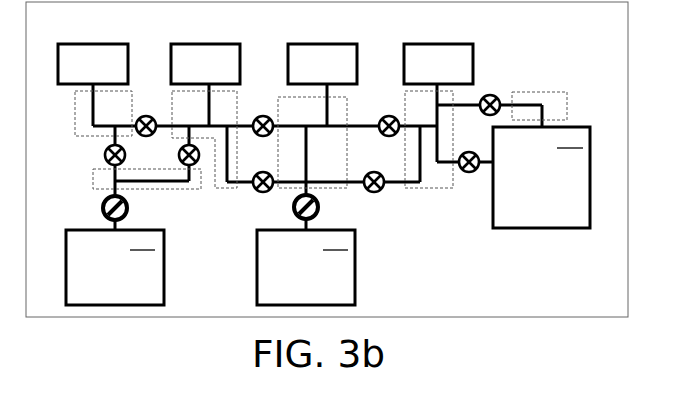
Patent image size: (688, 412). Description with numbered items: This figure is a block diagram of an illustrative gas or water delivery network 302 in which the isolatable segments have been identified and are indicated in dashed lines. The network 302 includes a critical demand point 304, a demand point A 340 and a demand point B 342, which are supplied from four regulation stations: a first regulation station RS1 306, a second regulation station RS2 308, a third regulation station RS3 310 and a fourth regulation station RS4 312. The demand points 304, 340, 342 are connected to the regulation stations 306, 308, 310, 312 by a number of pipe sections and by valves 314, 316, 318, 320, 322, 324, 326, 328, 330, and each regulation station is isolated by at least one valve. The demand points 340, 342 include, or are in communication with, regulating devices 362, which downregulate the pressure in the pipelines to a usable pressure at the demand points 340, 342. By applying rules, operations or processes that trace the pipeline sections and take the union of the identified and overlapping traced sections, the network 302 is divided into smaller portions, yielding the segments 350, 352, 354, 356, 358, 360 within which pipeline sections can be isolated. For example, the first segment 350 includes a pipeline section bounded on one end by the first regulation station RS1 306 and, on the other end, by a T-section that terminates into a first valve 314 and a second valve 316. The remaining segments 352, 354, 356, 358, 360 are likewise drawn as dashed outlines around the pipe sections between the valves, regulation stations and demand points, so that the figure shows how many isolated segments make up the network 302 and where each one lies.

The gas or water delivery network 302 is at (607, 55).
The critical demand point 304 is at (541, 177).
The first regulation station RS1 306 is at (98, 43).
The second regulation station RS2 308 is at (217, 43).
The third regulation station RS3 310 is at (335, 43).
The fourth regulation station RS4 312 is at (449, 43).
The first valve 314 is at (144, 118).
The second valve 316 is at (105, 154).
The valve 318 is at (179, 153).
The valve 320 is at (256, 119).
The valve 322 is at (256, 175).
The valve 324 is at (382, 119).
The valve 326 is at (367, 175).
The valve 328 is at (485, 97).
The valve 330 is at (472, 172).
The demand point A 340 is at (115, 267).
The demand point B 342 is at (306, 267).
The first segment 350 is at (75, 124).
The segment 352 is at (93, 178).
The segment 354 is at (220, 191).
The segment 356 is at (327, 191).
The segment 358 is at (423, 191).
The segment 360 is at (567, 106).
The regulating devices 362 is at (293, 207).